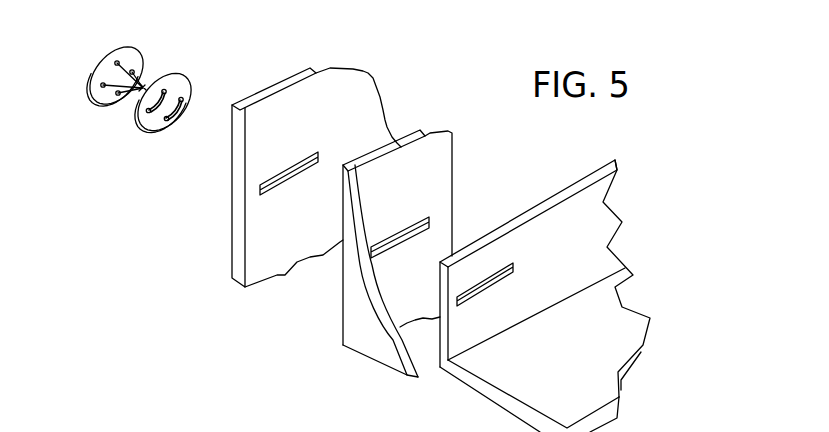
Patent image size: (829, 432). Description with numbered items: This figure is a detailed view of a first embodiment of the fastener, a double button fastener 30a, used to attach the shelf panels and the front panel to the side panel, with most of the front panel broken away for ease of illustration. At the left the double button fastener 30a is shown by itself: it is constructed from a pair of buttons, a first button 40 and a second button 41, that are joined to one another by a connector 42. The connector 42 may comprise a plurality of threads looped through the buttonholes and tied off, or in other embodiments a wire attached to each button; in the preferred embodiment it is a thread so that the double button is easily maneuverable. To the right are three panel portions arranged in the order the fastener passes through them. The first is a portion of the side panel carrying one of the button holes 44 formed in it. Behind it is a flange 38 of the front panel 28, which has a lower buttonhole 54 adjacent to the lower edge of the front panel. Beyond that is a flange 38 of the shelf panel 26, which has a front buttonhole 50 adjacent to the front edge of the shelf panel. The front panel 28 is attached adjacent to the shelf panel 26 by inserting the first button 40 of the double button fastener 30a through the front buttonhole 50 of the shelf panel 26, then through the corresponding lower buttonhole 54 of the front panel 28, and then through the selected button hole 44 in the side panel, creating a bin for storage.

The shelf panel 26 is at (498, 412).
The front panel 28 is at (428, 338).
The double button fastener 30a is at (168, 72).
The flange 38 is at (402, 153).
The first button 40 is at (97, 88).
The second button 41 is at (157, 134).
The connector 42 is at (143, 86).
The button hole 44 is at (290, 183).
The front buttonhole 50 is at (502, 267).
The lower buttonhole 54 is at (403, 240).